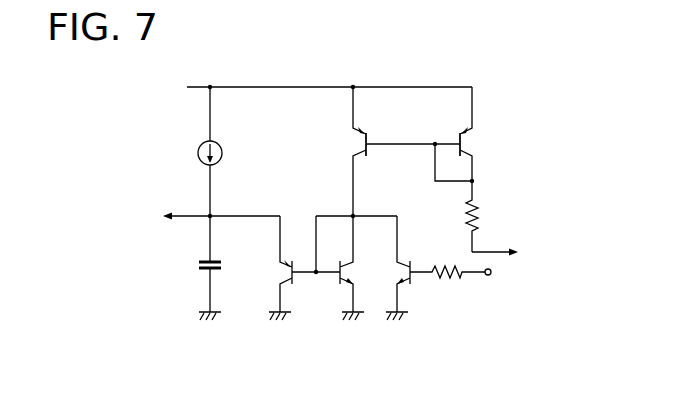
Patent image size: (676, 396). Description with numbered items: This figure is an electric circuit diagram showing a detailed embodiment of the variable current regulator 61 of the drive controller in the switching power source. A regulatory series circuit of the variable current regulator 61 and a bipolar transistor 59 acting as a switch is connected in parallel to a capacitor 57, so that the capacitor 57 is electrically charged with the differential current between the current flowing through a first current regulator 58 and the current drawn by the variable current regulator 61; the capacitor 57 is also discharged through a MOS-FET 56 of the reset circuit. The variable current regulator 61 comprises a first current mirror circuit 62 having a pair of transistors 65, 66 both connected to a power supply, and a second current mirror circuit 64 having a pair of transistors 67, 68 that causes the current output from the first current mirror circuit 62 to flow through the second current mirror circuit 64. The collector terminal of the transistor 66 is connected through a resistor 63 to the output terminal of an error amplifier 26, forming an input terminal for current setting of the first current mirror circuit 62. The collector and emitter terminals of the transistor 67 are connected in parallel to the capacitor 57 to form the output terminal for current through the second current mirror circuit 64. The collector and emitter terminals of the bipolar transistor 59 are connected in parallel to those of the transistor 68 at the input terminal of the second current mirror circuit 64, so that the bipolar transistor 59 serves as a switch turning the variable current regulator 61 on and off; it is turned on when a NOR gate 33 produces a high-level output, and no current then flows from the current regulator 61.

The variable current regulator 61 is at (297, 77).
The first current regulator 58 is at (199, 156).
The MOS-FET 56 is at (203, 216).
The capacitor 57 is at (222, 263).
The second current mirror circuit 64 is at (301, 211).
The transistor 67 is at (286, 281).
The transistor 68 is at (345, 282).
The bipolar transistor 59 is at (412, 262).
The NOR gate 33 is at (468, 279).
The transistor 65 is at (362, 133).
The transistor 66 is at (458, 134).
The first current mirror circuit 62 is at (483, 151).
The resistor 63 is at (478, 212).
The error amplifier 26 is at (514, 254).